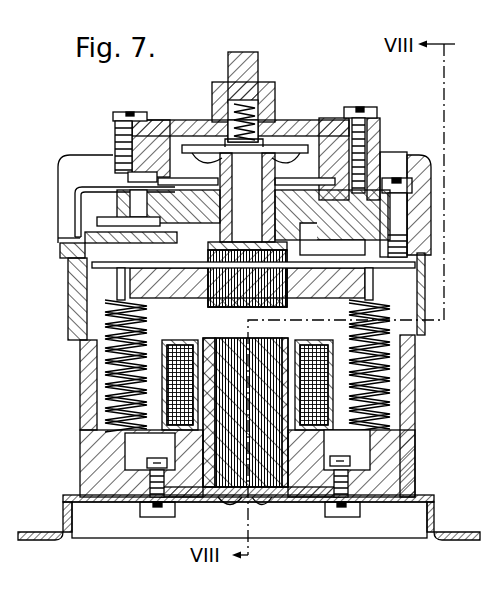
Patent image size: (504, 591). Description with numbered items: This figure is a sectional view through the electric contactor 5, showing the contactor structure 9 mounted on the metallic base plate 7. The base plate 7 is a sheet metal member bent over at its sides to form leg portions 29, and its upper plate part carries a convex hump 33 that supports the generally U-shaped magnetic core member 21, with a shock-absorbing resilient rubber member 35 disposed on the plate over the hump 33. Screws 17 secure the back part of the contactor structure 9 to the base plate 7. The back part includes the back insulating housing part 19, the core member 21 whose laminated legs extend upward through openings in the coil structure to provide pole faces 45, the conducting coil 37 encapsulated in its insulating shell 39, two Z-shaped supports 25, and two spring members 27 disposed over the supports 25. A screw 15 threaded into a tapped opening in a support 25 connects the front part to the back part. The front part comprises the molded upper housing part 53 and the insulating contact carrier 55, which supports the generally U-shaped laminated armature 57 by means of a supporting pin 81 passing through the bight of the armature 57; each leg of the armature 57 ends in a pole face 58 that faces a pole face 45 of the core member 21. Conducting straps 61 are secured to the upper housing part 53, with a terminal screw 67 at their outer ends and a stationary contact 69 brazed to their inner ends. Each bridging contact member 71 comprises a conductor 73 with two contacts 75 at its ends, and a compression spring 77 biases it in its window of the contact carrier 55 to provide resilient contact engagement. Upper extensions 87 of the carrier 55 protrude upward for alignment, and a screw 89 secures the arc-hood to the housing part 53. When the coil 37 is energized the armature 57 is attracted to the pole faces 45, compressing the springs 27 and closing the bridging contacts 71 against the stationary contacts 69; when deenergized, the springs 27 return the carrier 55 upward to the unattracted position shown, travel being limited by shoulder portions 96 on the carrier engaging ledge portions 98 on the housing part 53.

The contactor 5 is at (36, 168).
The base plate 7 is at (90, 525).
The contactor structure 9 is at (47, 352).
The screw 15 is at (400, 178).
The screw 17 is at (165, 518).
The back insulating housing part 19 is at (410, 481).
The magnetic core member 21 is at (294, 503).
The support 25 is at (120, 449).
The spring member 27 is at (80, 386).
The leg portion 29 is at (62, 523).
The hump 33 is at (264, 500).
The shock-absorbing resilient member 35 is at (235, 499).
The conducting coil 37 is at (176, 342).
The insulating shell 39 is at (150, 451).
The pole face 45 is at (215, 340).
The upper housing part 53 is at (431, 202).
The contact carrier 55 is at (340, 318).
The armature 57 is at (242, 306).
The pole face 58 is at (272, 307).
The conducting strap 61 is at (84, 186).
The terminal screw 67 is at (125, 174).
The stationary contact 69 is at (247, 197).
The bridging contact member 71 is at (289, 146).
The conductor 73 is at (206, 146).
The contact 75 is at (245, 137).
The compression spring 77 is at (270, 82).
The supporting pin 81 is at (259, 274).
The upper extension 87 is at (240, 52).
The screw 89 is at (130, 113).
The shoulder portion 96 is at (207, 233).
The ledge portion 98 is at (247, 230).